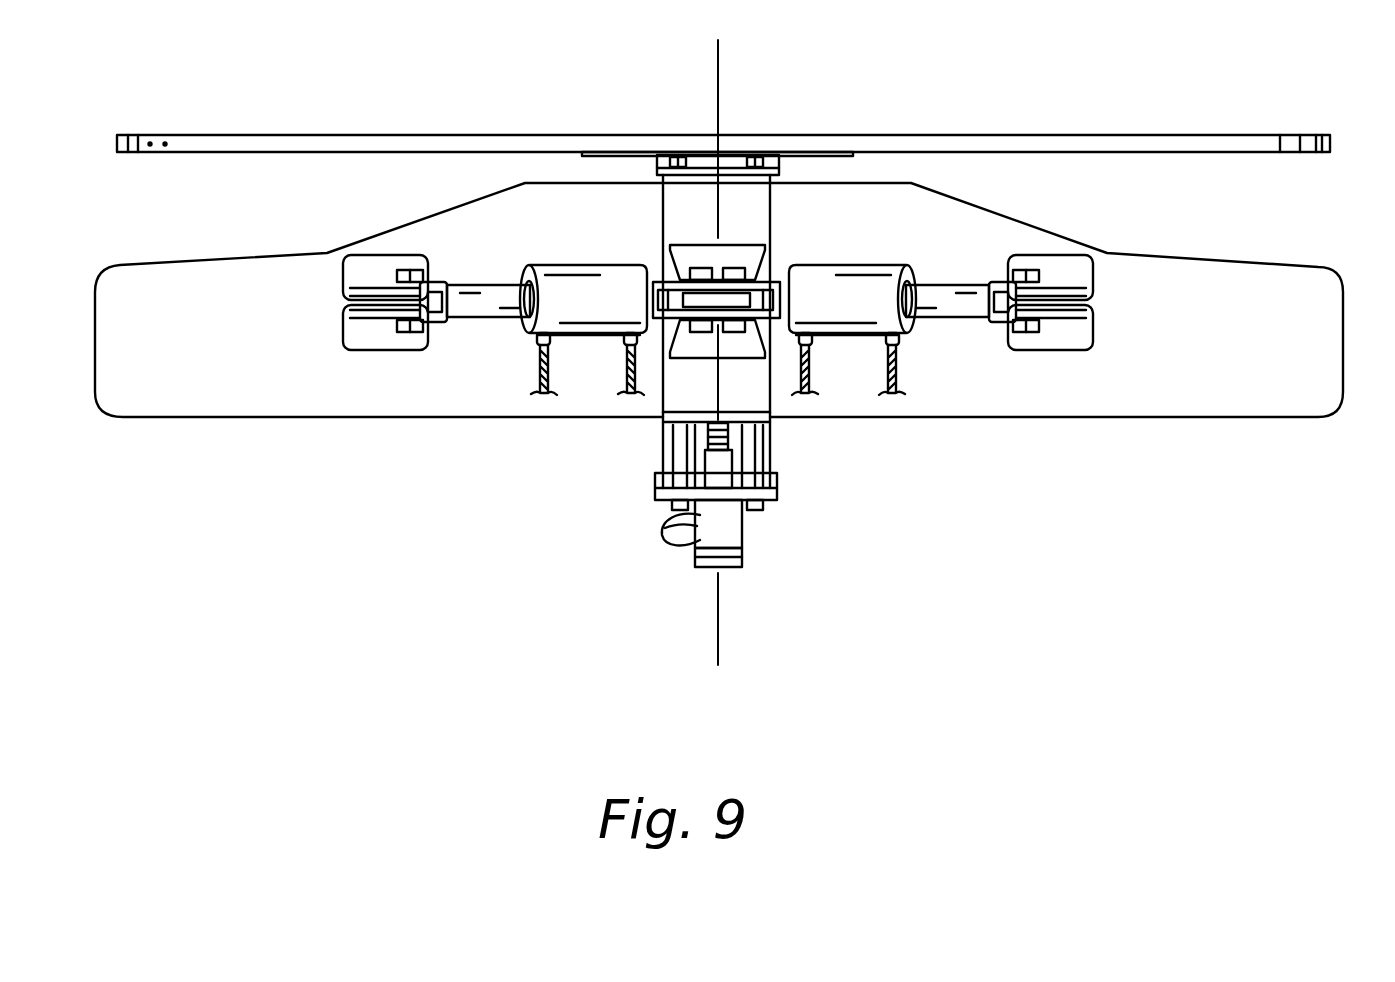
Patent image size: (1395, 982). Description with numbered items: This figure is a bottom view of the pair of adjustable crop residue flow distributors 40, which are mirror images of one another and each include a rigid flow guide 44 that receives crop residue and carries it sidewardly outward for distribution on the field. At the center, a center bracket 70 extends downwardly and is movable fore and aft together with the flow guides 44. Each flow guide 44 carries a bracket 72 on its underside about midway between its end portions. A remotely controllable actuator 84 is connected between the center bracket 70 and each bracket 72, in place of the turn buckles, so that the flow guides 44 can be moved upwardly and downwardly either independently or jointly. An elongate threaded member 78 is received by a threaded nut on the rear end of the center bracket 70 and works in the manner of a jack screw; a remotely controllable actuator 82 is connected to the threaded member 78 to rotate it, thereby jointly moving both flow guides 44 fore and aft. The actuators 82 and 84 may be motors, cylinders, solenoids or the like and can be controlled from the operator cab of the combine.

The crop residue flow distributor 40 is at (122, 417).
The flow guide 44 is at (357, 417).
The center bracket 70 is at (772, 220).
The bracket 72 is at (347, 350).
The threaded member 78 is at (725, 438).
The remotely controllable actuator 82 is at (742, 543).
The remotely controllable actuator 84 is at (578, 336).